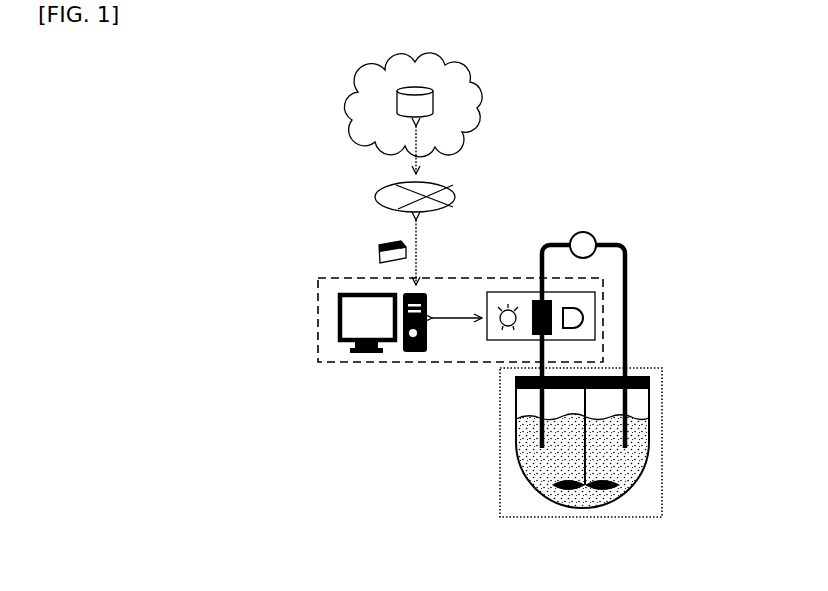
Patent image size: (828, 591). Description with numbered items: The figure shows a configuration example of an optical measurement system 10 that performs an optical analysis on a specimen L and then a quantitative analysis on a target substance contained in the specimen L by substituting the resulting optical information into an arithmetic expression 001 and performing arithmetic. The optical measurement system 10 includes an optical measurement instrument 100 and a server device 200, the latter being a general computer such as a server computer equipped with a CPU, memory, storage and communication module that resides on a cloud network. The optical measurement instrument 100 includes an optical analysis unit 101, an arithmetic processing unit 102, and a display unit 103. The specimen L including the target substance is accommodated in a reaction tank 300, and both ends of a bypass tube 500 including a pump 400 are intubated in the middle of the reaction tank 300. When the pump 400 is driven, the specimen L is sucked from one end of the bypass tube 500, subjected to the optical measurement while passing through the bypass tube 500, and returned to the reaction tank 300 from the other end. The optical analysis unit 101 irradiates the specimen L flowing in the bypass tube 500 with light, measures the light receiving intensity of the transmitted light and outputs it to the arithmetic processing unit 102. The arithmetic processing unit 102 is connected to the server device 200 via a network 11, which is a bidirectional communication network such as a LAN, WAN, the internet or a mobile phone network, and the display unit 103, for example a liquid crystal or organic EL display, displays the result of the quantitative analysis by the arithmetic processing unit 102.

The optical measurement system 10 is at (633, 168).
The server device 200 is at (433, 103).
The network 11 is at (447, 190).
The arithmetic expression 001 is at (378, 245).
The optical measurement instrument 100 is at (322, 363).
The optical analysis unit 101 is at (487, 342).
The arithmetic processing unit 102 is at (400, 350).
The display unit 103 is at (342, 292).
The reaction tank 300 is at (567, 442).
The pump 400 is at (592, 232).
The bypass tube 500 is at (627, 300).
The specimen L is at (634, 465).